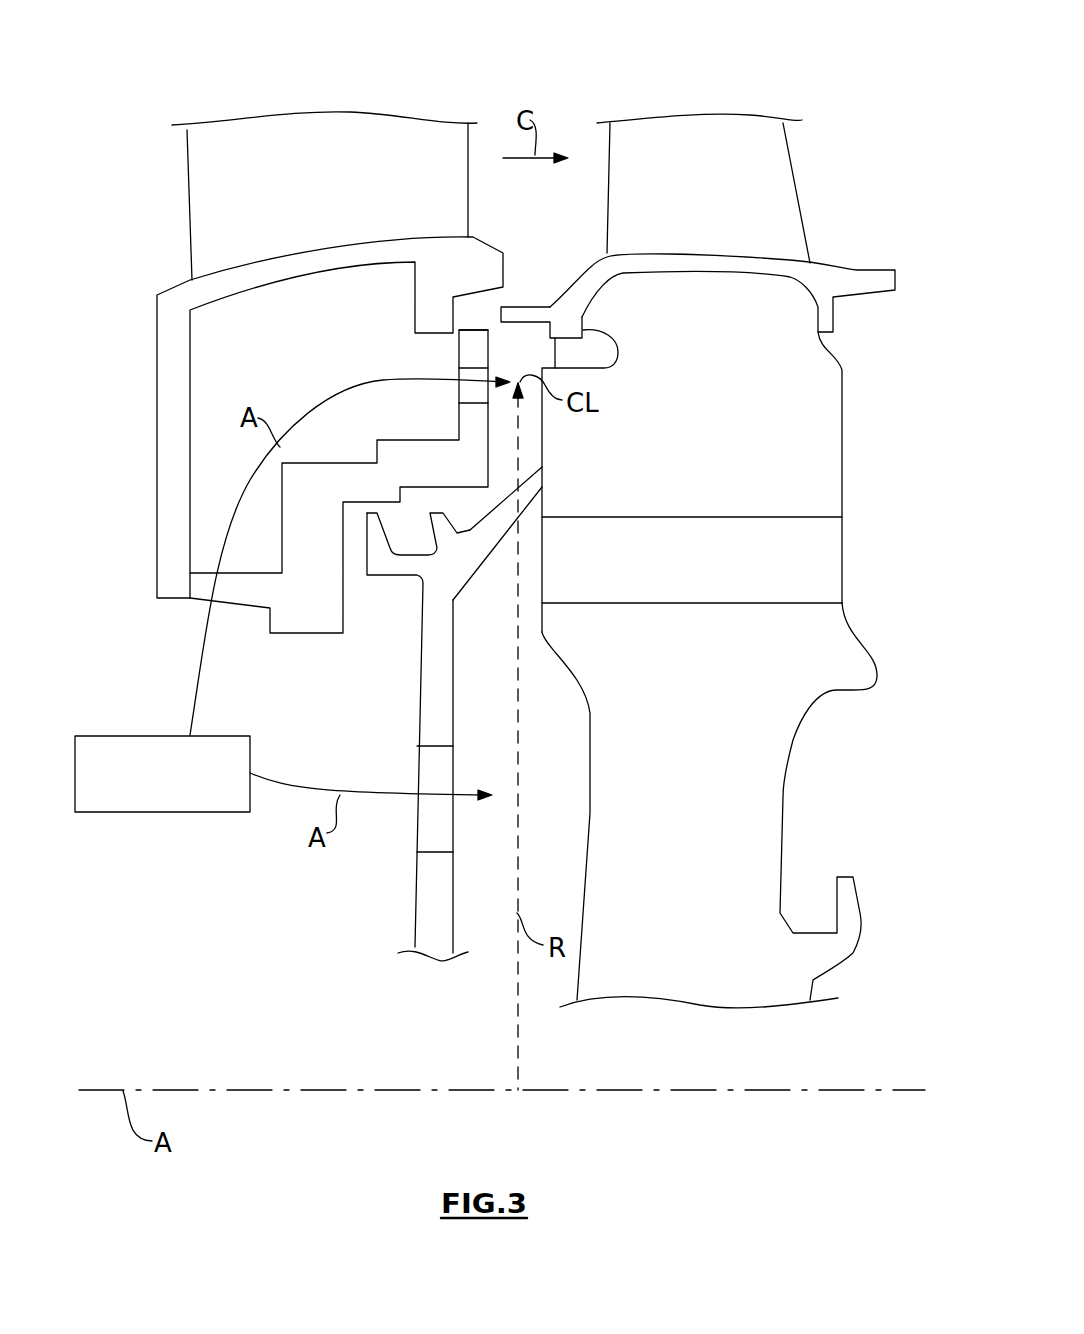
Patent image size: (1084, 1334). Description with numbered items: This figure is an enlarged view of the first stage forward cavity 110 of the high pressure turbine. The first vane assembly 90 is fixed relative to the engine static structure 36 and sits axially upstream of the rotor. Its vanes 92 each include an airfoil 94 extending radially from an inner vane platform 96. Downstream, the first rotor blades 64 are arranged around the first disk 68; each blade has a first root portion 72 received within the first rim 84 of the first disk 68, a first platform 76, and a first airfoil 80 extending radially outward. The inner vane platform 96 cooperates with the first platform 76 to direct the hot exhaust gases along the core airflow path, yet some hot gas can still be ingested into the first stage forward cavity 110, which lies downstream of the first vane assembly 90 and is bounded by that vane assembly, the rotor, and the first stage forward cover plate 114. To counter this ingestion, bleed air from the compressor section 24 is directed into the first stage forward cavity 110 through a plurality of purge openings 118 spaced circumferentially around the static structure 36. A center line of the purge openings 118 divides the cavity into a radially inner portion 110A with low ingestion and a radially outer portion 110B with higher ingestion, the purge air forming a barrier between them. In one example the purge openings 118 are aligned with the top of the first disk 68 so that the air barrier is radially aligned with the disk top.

The first vane assembly 90 is at (345, 80).
The vanes 92 is at (164, 177).
The airfoil 94 is at (333, 188).
The inner vane platform 96 is at (188, 280).
The engine static structure 36 is at (288, 616).
The purge openings 118 is at (458, 368).
The first stage forward cavity 110 is at (499, 425).
The radially inner portion 110A is at (527, 436).
The radially outer portion 110B is at (521, 341).
The first rotor blades 64 is at (853, 150).
The first airfoil 80 is at (715, 190).
The first platform 76 is at (577, 283).
The first root portion 72 is at (716, 430).
The first rim 84 is at (630, 563).
The first disk 68 is at (721, 818).
The first stage forward cover plate 114 is at (428, 707).
The compressor section 24 is at (163, 735).